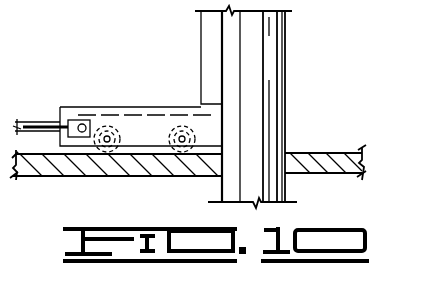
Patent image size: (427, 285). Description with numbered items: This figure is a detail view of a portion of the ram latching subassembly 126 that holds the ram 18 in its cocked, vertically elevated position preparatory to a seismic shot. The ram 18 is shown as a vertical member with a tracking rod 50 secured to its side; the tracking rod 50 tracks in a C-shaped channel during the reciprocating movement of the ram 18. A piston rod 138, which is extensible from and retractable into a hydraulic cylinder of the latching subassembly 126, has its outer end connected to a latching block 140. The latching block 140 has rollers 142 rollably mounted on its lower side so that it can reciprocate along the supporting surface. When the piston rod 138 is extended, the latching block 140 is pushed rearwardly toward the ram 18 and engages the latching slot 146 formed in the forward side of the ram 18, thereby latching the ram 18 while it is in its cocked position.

The ram 18 is at (267, 33).
The tracking rod 50 is at (255, 67).
The ram latching subassembly 126 is at (85, 78).
The piston rod 138 is at (30, 127).
The latching block 140 is at (128, 118).
The rollers 142 is at (107, 154).
The latching slot 146 is at (205, 112).